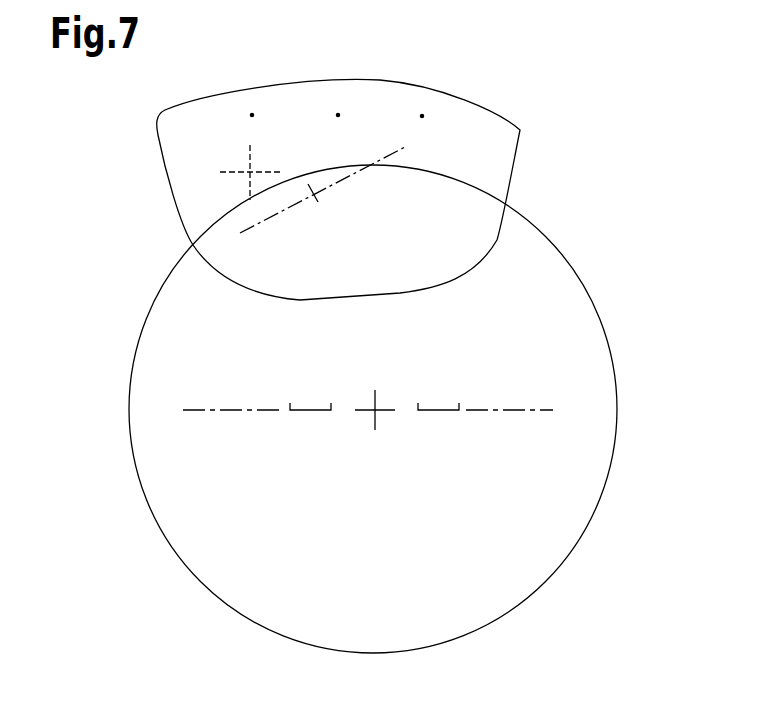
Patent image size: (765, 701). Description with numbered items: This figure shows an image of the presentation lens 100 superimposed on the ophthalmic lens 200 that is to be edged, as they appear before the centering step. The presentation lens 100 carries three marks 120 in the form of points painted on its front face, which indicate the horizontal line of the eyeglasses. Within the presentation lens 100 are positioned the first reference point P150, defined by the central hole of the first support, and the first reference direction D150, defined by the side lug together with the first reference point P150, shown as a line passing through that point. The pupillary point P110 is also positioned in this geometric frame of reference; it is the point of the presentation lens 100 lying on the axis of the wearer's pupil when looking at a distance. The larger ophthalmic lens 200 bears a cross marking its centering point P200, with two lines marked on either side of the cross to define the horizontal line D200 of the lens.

The presentation lens 100 is at (526, 131).
The marks 120 is at (422, 116).
The ophthalmic lens 200 is at (592, 293).
The pupillary point P110 is at (250, 172).
The first reference point P150 is at (314, 194).
The first reference direction D150 is at (260, 229).
The centering point P200 is at (373, 411).
The horizontal line D200 is at (500, 411).